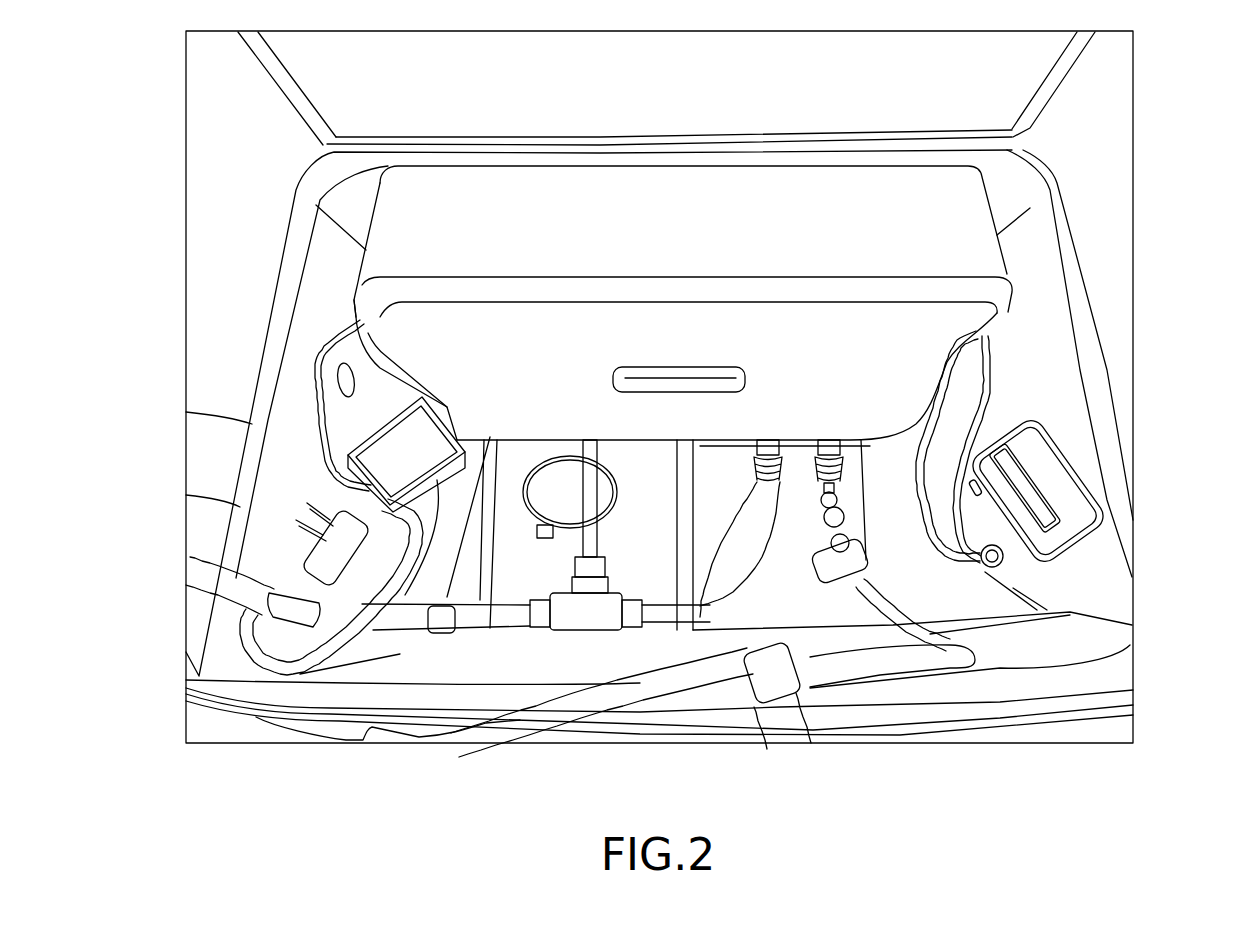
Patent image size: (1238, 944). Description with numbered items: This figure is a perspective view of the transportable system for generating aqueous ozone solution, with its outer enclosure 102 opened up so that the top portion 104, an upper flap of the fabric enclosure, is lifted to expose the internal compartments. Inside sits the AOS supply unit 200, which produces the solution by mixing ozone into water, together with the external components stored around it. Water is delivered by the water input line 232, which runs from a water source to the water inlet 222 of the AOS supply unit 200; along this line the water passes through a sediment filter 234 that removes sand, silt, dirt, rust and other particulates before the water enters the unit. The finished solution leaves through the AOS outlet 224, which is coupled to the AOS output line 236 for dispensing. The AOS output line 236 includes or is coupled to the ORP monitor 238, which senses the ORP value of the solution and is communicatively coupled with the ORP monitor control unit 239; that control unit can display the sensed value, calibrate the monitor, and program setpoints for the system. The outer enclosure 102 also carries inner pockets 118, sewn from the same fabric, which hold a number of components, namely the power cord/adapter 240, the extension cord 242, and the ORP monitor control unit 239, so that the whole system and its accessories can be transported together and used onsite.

The top portion 104 is at (275, 77).
The outer enclosure 102 is at (269, 343).
The AOS supply unit 200 is at (963, 215).
The water inlet 222 is at (835, 468).
The ORP monitor control unit 239 is at (1070, 487).
The power cord/adapter 240 is at (380, 460).
The extension cord 242 is at (345, 540).
The ORP monitor 238 is at (586, 626).
The AOS outlet 224 is at (700, 617).
The AOS output line 236 is at (733, 605).
The sediment filter 234 is at (822, 580).
The water input line 232 is at (906, 658).
The inner pockets 118 is at (1008, 590).